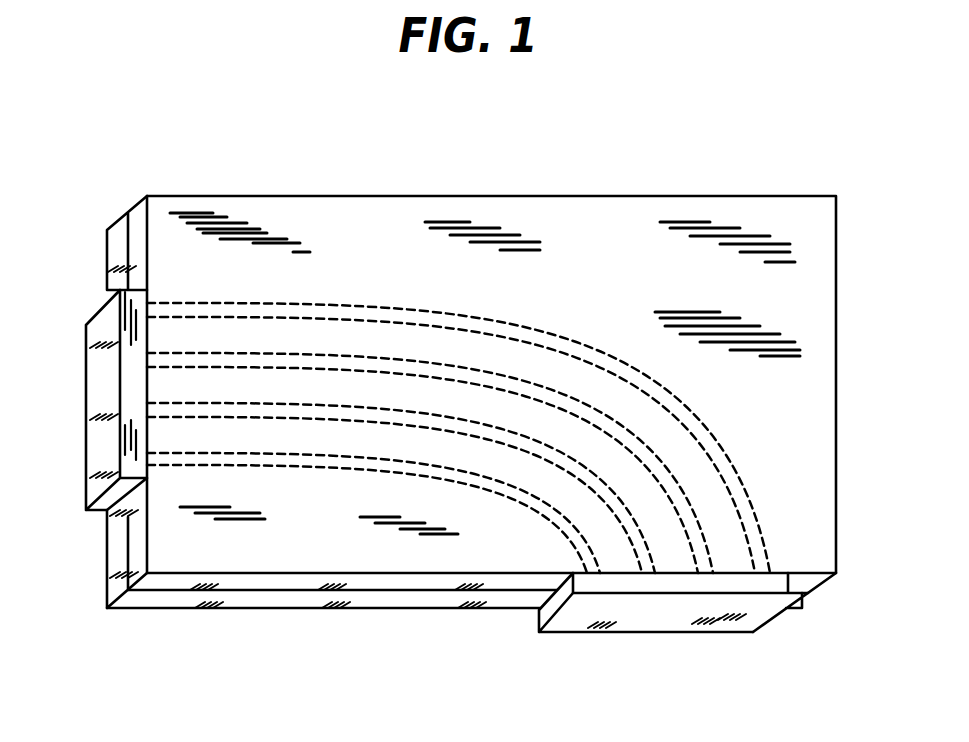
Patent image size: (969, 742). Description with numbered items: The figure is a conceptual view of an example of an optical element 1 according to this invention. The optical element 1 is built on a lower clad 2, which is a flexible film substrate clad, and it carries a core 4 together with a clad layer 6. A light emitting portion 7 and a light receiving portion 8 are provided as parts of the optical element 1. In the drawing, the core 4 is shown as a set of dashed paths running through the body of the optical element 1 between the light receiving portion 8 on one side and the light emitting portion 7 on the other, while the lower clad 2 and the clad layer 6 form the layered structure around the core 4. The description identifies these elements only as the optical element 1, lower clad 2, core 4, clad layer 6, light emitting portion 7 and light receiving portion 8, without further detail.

The optical element 1 is at (861, 421).
The lower clad 2 is at (306, 602).
The core 4 is at (752, 486).
The clad layer 6 is at (362, 581).
The light emitting portion 7 is at (699, 631).
The light receiving portion 8 is at (96, 370).